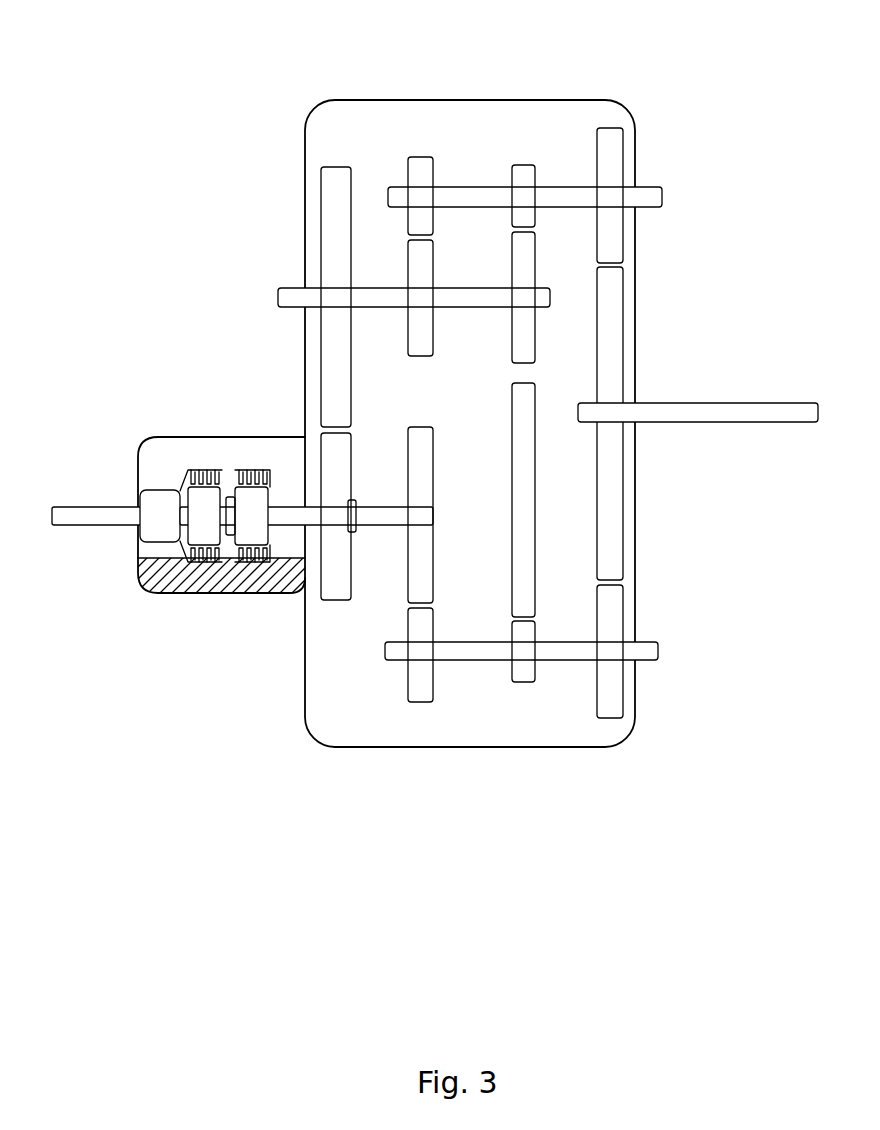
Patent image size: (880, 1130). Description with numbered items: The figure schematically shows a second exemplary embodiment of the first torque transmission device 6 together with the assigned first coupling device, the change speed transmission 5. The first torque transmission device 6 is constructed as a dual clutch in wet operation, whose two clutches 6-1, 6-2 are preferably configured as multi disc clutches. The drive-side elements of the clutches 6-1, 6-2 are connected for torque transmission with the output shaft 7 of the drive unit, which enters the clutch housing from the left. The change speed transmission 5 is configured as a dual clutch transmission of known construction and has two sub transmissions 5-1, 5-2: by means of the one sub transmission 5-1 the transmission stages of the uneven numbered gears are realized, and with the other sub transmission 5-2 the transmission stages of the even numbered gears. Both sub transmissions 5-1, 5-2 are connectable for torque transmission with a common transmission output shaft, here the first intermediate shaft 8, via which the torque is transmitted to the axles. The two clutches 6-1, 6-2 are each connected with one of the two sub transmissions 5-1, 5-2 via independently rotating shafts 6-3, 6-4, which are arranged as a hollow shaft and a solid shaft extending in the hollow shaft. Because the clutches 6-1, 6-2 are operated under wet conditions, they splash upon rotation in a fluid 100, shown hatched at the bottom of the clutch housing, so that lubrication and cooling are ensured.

The change speed transmission 5 is at (684, 94).
The sub transmission 5-1 is at (477, 716).
The sub transmission 5-2 is at (387, 128).
The first torque transmission device 6 is at (150, 369).
The clutch 6-1 is at (209, 469).
The clutch 6-2 is at (256, 469).
The shaft 6-3 is at (353, 500).
The shaft 6-4 is at (369, 528).
The output shaft 7 is at (97, 506).
The first intermediate shaft 8 is at (755, 412).
The fluid 100 is at (212, 595).